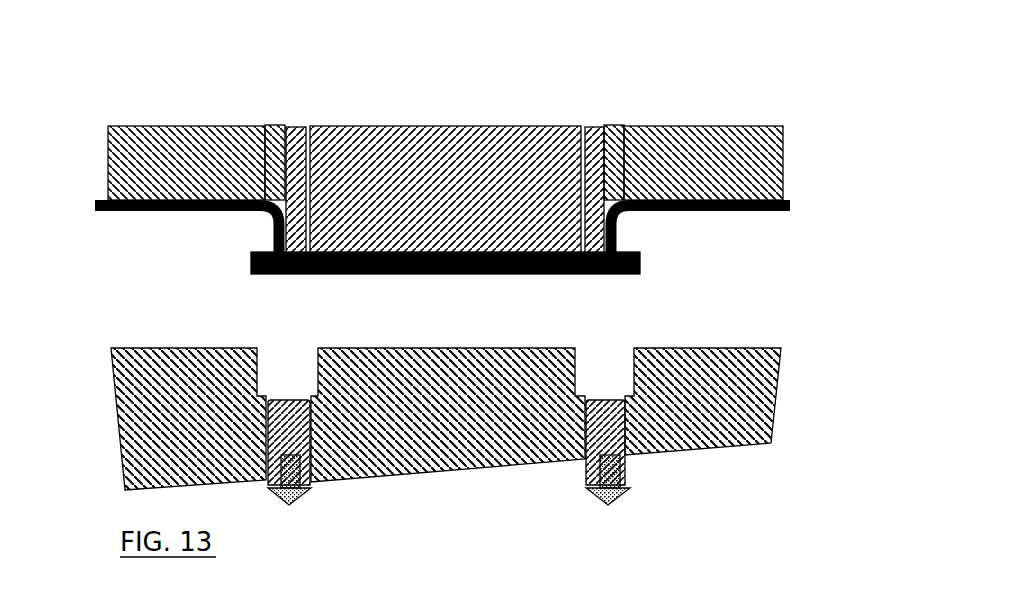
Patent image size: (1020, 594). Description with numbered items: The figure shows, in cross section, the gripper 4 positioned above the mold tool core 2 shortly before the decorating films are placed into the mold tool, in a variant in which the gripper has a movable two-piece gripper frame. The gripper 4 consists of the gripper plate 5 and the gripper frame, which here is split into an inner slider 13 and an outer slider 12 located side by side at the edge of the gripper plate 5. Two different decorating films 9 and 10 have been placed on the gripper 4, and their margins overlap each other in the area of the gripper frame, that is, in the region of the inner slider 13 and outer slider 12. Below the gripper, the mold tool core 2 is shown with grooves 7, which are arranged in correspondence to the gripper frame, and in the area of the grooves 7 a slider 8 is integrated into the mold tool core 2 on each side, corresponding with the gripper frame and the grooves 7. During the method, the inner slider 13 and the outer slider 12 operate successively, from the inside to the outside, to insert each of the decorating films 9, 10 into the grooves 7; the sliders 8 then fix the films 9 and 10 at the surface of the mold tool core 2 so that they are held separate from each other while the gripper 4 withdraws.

The mold tool core 2 is at (446, 444).
The gripper 4 is at (156, 90).
The gripper plate 5 is at (383, 138).
The grooves 7 is at (601, 360).
The slider 8 is at (620, 458).
The decorating film 9 is at (445, 270).
The decorating film 10 is at (785, 222).
The outer slider 12 is at (611, 130).
The inner slider 13 is at (584, 150).